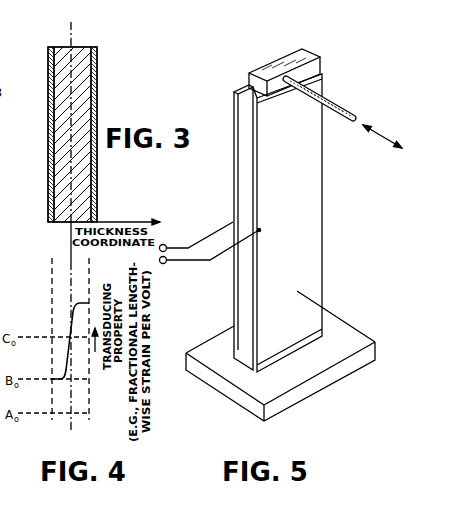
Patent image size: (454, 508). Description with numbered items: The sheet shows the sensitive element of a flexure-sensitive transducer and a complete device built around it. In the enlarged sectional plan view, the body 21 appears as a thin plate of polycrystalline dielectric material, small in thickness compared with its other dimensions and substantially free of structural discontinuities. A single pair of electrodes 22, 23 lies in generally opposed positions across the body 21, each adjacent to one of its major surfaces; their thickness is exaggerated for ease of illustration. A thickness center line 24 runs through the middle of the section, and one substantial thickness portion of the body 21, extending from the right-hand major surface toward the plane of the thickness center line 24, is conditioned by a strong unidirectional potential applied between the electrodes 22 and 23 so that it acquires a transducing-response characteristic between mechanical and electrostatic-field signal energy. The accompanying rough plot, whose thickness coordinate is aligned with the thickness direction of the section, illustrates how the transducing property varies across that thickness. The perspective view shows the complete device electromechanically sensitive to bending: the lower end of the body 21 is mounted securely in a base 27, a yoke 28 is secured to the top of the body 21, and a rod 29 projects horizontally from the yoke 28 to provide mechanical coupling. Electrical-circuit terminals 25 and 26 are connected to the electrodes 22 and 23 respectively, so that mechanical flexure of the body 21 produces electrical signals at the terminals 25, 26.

In FIG. 3, the body 21 is at (52, 47).
In FIG. 5, the body 21 is at (243, 100).
In FIG. 3, the electrode 22 is at (50, 72).
In FIG. 5, the electrode 22 is at (311, 161).
In FIG. 3, the electrode 23 is at (96, 72).
In FIG. 3, the thickness center line 24 is at (72, 34).
In FIG. 5, the electrical-circuit terminal 25 is at (166, 262).
In FIG. 5, the electrical-circuit terminal 26 is at (166, 246).
In FIG. 5, the base 27 is at (370, 352).
In FIG. 5, the yoke 28 is at (278, 68).
In FIG. 5, the rod 29 is at (333, 97).